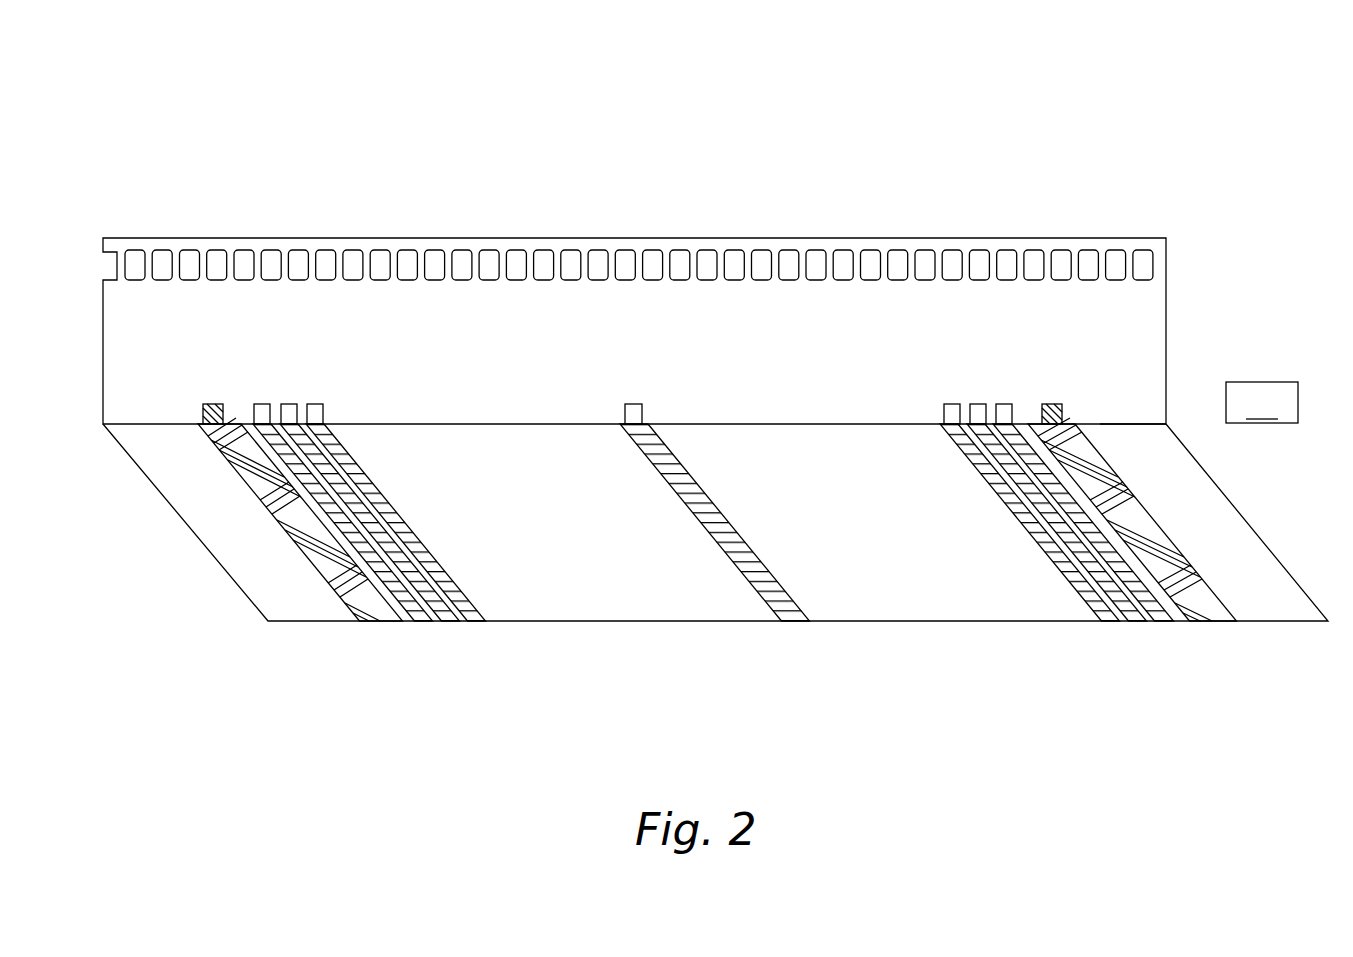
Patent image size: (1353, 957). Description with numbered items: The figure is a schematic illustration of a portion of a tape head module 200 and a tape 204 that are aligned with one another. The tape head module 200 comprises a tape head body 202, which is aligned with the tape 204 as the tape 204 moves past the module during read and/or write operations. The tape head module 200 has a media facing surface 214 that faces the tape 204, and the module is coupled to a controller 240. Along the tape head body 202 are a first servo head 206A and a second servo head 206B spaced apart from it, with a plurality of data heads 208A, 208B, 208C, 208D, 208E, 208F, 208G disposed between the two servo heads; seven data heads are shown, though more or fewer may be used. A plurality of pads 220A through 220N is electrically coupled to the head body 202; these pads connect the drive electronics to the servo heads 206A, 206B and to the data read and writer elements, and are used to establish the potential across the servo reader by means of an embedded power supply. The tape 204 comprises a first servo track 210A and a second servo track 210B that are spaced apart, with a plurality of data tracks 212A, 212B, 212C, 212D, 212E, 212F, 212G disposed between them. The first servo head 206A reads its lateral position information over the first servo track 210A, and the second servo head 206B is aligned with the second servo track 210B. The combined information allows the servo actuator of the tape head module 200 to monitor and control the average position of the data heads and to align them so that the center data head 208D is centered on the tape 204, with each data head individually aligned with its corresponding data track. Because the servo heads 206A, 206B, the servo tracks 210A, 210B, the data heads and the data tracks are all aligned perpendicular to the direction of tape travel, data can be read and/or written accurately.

The tape head module 200 is at (162, 89).
The tape head body 202 is at (1166, 324).
The tape 204 is at (1250, 523).
The first servo head 206A is at (212, 403).
The second servo head 206B is at (1052, 403).
The data head 208A is at (262, 403).
The data head 208B is at (289, 403).
The data head 208C is at (315, 403).
The data head 208D is at (634, 403).
The data head 208E is at (952, 403).
The data head 208F is at (978, 403).
The data head 208G is at (1004, 403).
The first servo track 210A is at (382, 621).
The second servo track 210B is at (1213, 621).
The data track 212A is at (427, 621).
The data track 212B is at (452, 621).
The data track 212C is at (477, 621).
The data track 212D is at (795, 621).
The data track 212E is at (1120, 621).
The data track 212F is at (1143, 621).
The data track 212G is at (1168, 621).
The media facing surface 214 is at (1118, 424).
The pad 220A is at (192, 250).
The pad 220N is at (1090, 250).
The controller 240 is at (1166, 424).